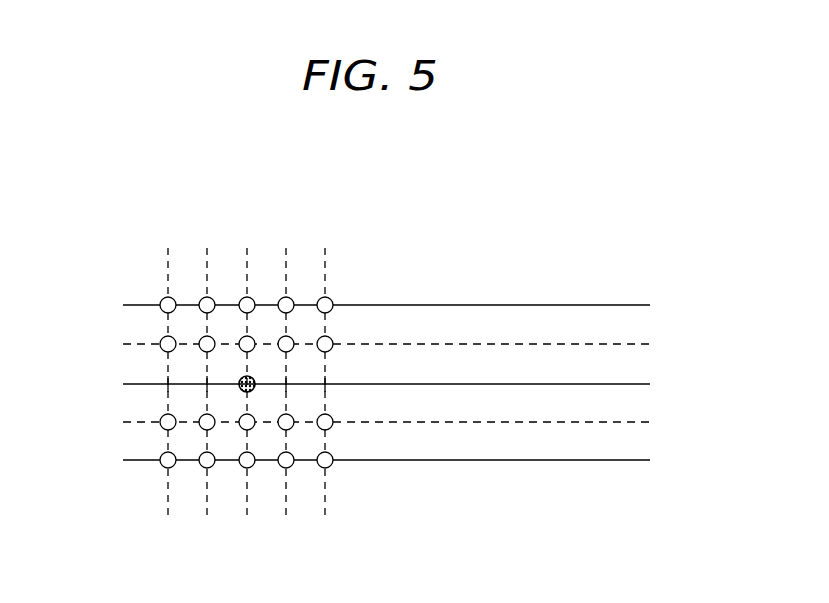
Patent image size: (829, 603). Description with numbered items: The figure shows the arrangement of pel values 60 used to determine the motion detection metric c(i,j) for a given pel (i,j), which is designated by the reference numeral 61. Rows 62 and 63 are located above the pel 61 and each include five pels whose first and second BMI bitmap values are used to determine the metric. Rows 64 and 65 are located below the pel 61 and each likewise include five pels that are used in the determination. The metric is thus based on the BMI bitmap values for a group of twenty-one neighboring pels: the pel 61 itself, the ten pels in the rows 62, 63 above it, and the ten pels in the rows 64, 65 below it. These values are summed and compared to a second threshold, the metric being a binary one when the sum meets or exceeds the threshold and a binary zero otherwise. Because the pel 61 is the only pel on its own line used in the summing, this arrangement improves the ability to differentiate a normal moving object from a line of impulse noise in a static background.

The pixel grid of interlaced fields 60 is at (84, 313).
The pel (i,j) 61 is at (241, 392).
The row above the pel (i,j) 62 is at (510, 305).
The row above the pel (i,j) 63 is at (597, 344).
The row below the pel (i,j) 64 is at (626, 422).
The row below the pel (i,j) 65 is at (597, 461).